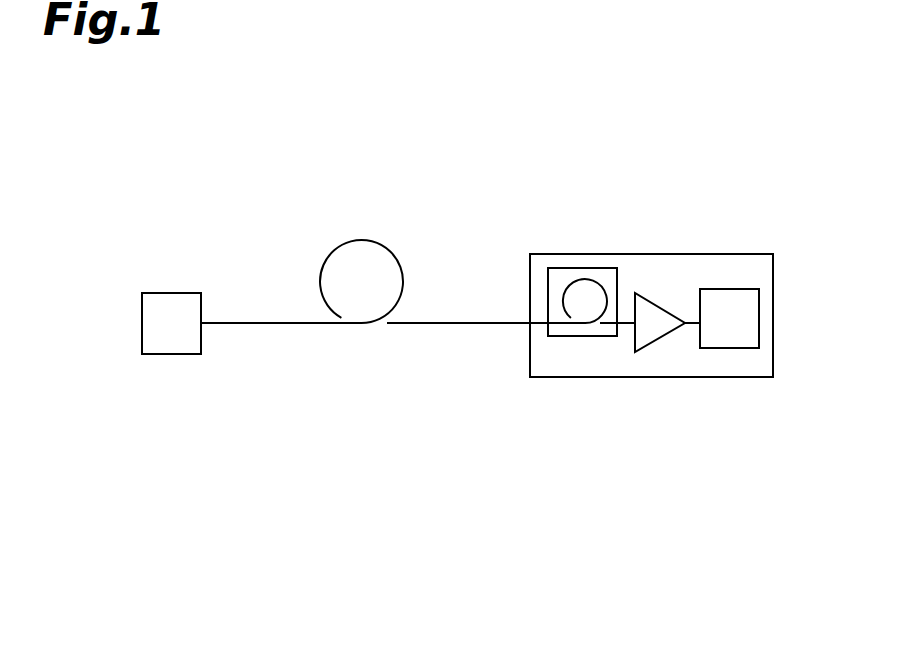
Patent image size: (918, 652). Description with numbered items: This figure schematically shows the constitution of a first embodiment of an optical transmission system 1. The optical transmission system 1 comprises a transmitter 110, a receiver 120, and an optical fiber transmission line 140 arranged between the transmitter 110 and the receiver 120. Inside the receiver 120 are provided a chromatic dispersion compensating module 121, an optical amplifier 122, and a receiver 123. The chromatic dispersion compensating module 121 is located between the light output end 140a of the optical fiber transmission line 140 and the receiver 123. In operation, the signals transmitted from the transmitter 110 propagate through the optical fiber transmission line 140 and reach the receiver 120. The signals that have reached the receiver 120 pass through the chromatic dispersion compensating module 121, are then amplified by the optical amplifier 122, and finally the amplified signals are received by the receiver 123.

The optical transmission system 1 is at (548, 138).
The transmitter 110 is at (175, 354).
The receiver 120 is at (648, 377).
The chromatic dispersion compensating module 121 is at (578, 268).
The optical amplifier 122 is at (660, 306).
The receiver 123 is at (738, 289).
The optical fiber transmission line 140 is at (362, 240).
The light output end 140a is at (550, 320).